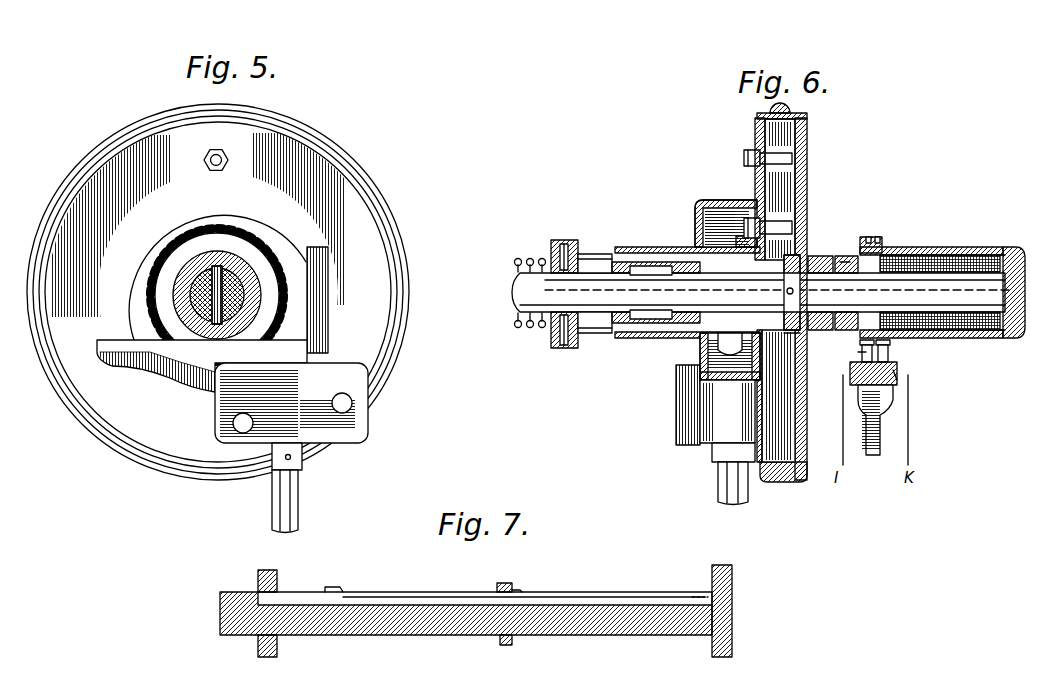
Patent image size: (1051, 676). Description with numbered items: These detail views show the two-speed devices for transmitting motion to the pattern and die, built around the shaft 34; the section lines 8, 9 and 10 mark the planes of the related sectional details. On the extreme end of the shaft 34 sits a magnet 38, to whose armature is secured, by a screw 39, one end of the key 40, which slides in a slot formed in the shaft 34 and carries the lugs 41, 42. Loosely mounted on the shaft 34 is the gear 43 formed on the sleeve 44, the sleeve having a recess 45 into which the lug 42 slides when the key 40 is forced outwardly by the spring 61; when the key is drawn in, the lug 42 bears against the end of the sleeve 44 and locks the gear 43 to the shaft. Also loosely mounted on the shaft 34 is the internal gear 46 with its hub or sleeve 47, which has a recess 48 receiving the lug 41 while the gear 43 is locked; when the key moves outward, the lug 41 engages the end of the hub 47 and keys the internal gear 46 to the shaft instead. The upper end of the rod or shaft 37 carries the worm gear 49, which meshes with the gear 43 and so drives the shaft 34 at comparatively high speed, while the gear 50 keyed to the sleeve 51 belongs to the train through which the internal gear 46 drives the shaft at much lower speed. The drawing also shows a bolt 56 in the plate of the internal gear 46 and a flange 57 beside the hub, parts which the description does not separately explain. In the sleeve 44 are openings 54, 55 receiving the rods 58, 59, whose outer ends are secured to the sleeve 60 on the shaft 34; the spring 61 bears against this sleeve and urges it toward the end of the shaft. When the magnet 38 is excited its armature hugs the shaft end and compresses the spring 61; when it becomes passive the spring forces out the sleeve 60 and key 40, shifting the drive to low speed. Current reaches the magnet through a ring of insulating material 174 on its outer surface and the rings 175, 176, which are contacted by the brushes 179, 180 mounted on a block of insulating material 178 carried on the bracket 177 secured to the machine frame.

In FIG. 6, the section line 8- 8 is at (786, 552).
In FIG. 6, the section line 9- 9 is at (858, 525).
In FIG. 6, the section line 10- 10 is at (558, 412).
In FIG. 5, the shaft 34 is at (210, 300).
In FIG. 6, the shaft 34 is at (514, 291).
In FIG. 7, the shaft 34 is at (420, 630).
In FIG. 5, the rod or shaft 37 is at (300, 508).
In FIG. 6, the rod or shaft 37 is at (746, 497).
In FIG. 6, the magnet 38 is at (1023, 256).
In FIG. 6, the screw 39 is at (1007, 267).
In FIG. 7, the key 40 is at (595, 598).
In FIG. 6, the lug 41 is at (842, 262).
In FIG. 7, the lug 41 is at (515, 590).
In FIG. 6, the lug 42 is at (617, 265).
In FIG. 7, the lug 42 is at (340, 590).
In FIG. 5, the gear 43 is at (236, 237).
In FIG. 6, the gear 43 is at (742, 243).
In FIG. 6, the sleeve 44 is at (655, 248).
In FIG. 6, the recess 45 is at (646, 268).
In FIG. 6, the internal gear 46 is at (807, 200).
In FIG. 6, the hub or sleeve 47 is at (820, 264).
In FIG. 6, the recess 48 is at (850, 262).
In FIG. 5, the worm gear 49 is at (288, 268).
In FIG. 6, the gear 50 is at (806, 262).
In FIG. 6, the sleeve 51 is at (778, 380).
In FIG. 6, the opening 54 is at (722, 240).
In FIG. 6, the opening 55 is at (715, 340).
In FIG. 6, the bolt 56 is at (750, 215).
In FIG. 6, the flange 57 is at (792, 337).
In FIG. 6, the rod 58 is at (588, 258).
In FIG. 6, the rod 59 is at (593, 331).
In FIG. 6, the sleeve 60 is at (556, 246).
In FIG. 6, the spring 61 is at (513, 332).
In FIG. 6, the ring of insulating material 174 is at (905, 250).
In FIG. 6, the ring 175 is at (882, 247).
In FIG. 6, the ring 176 is at (868, 240).
In FIG. 6, the bracket 177 is at (872, 448).
In FIG. 6, the block of insulating material 178 is at (896, 379).
In FIG. 6, the contact or brush 179 is at (894, 373).
In FIG. 6, the contact or brush 180 is at (860, 352).